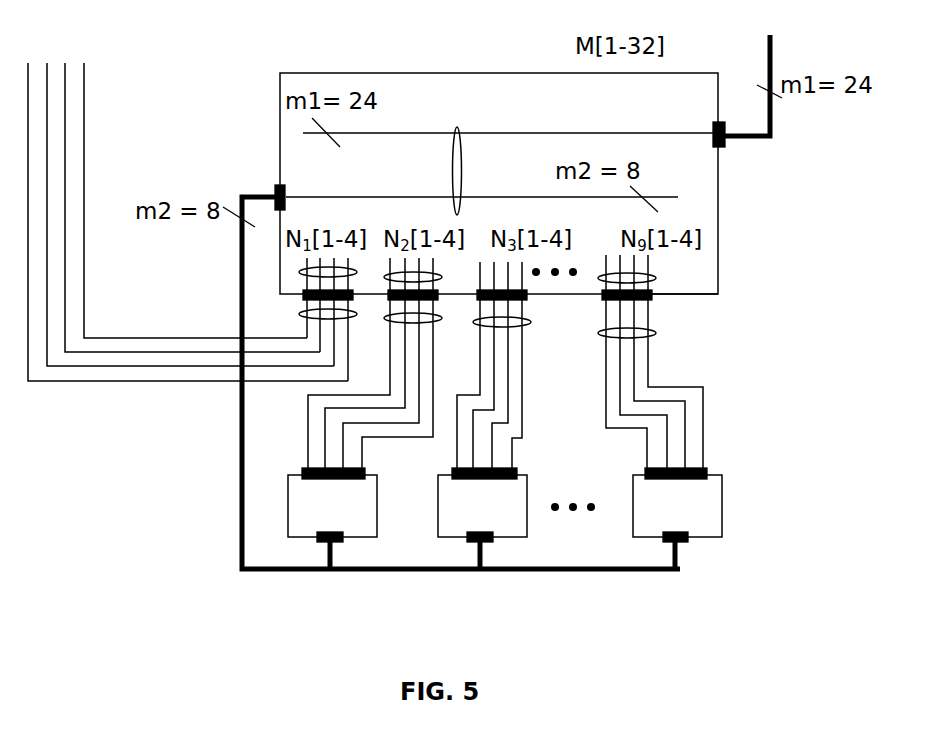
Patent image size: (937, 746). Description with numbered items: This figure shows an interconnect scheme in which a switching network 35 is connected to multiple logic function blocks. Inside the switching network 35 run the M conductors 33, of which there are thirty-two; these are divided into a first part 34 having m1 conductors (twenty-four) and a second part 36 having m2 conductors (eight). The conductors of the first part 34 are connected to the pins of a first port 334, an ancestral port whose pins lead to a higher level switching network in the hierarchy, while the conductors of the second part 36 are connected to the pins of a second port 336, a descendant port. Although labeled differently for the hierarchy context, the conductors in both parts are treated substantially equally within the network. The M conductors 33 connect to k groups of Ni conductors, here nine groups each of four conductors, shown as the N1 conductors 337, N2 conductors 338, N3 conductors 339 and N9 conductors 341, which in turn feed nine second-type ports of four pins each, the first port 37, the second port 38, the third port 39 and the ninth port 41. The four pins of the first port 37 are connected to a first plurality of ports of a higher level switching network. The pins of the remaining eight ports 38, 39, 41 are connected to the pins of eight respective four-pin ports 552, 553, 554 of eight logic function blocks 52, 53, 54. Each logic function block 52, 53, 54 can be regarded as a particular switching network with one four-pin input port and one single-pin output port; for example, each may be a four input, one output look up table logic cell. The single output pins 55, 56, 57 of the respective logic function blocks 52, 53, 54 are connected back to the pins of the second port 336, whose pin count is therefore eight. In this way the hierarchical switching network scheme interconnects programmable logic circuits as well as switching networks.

The M conductors 33 is at (458, 157).
The first part of M conductors 34 is at (402, 133).
The switching network 35 is at (332, 73).
The second part of M conductors 36 is at (300, 197).
The first port of the k ports 37 is at (302, 300).
The second port of the k ports 38 is at (390, 300).
The third port of the k ports 39 is at (477, 302).
The ninth port of the k ports 41 is at (606, 303).
The first logic function block 52 is at (377, 505).
The second logic function block 53 is at (526, 502).
The eighth logic function block 54 is at (722, 510).
The output pin of first logic function block 55 is at (337, 543).
The output pin of second logic function block 56 is at (487, 543).
The output pin of eighth logic function block 57 is at (680, 545).
The first port 334 is at (725, 145).
The second port 336 is at (273, 193).
The N1 conductors 337 is at (300, 272).
The N2 conductors 338 is at (390, 275).
The N3 conductors 339 is at (718, 294).
The N9 conductors 341 is at (640, 281).
The port of first logic function block 552 is at (302, 475).
The port of second logic function block 553 is at (515, 472).
The port of eighth logic function block 554 is at (705, 470).